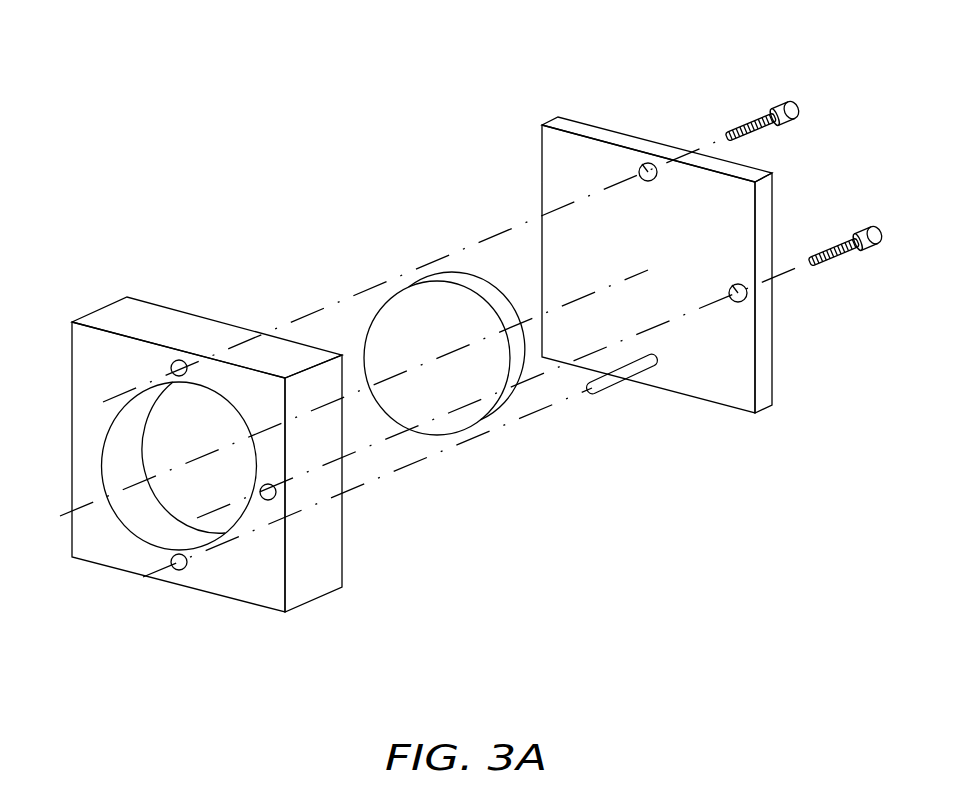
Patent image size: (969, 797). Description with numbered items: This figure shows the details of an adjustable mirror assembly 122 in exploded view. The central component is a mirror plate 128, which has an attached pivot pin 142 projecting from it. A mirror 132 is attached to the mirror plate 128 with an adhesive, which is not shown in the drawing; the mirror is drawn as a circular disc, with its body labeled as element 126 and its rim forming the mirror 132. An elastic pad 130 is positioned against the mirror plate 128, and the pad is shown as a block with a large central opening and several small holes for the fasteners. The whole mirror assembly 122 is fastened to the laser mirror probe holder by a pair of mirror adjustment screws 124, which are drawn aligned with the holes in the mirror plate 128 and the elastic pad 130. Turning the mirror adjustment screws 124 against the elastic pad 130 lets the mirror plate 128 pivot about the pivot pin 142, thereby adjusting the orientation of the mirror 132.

The mirror assembly 122 is at (332, 205).
The mirror adjustment screws 124 is at (805, 146).
The lens 126 is at (448, 390).
The mirror plate 128 is at (538, 155).
The elastic pad 130 is at (345, 532).
The mirror 132 is at (512, 400).
The pivot pin 142 is at (607, 392).